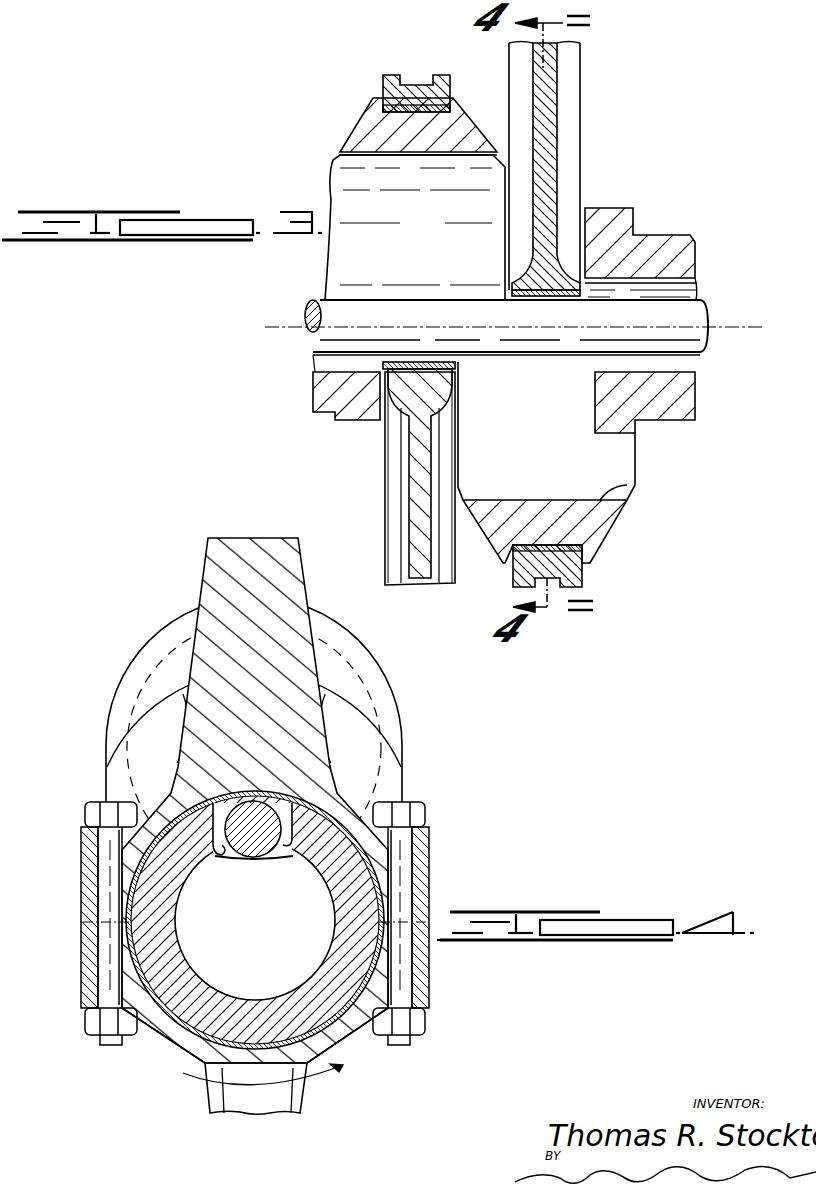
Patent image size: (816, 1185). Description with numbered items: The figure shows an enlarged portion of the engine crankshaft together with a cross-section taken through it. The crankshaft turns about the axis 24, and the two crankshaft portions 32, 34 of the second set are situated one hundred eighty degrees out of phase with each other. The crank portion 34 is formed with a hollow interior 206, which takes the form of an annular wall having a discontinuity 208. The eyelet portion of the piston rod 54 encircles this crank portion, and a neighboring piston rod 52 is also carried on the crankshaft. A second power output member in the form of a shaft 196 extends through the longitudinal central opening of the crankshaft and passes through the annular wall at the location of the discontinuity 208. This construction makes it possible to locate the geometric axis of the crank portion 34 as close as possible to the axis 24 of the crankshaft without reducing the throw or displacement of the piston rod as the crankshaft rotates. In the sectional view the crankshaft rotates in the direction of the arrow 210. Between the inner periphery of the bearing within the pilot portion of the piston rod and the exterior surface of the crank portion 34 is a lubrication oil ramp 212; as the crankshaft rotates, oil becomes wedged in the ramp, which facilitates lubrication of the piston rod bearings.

In FIG. 3, the axis 24 is at (300, 326).
In FIG. 3, the crankshaft portion 32 is at (360, 125).
In FIG. 3, the crank portion 34 is at (605, 525).
In FIG. 4, the crank portion 34 is at (337, 962).
In FIG. 3, the piston rod 52 is at (415, 465).
In FIG. 4, the piston rod 52 is at (303, 1098).
In FIG. 3, the piston rod 54 is at (545, 95).
In FIG. 4, the piston rod 54 is at (253, 536).
In FIG. 3, the shaft 196 is at (417, 302).
In FIG. 4, the shaft 196 is at (270, 845).
In FIG. 3, the hollow interior 206 is at (612, 492).
In FIG. 4, the hollow interior 206 is at (163, 1013).
In FIG. 4, the discontinuity 208 is at (217, 845).
In FIG. 4, the arrow 210 is at (260, 1090).
In FIG. 4, the lubrication oil ramp 212 is at (228, 760).